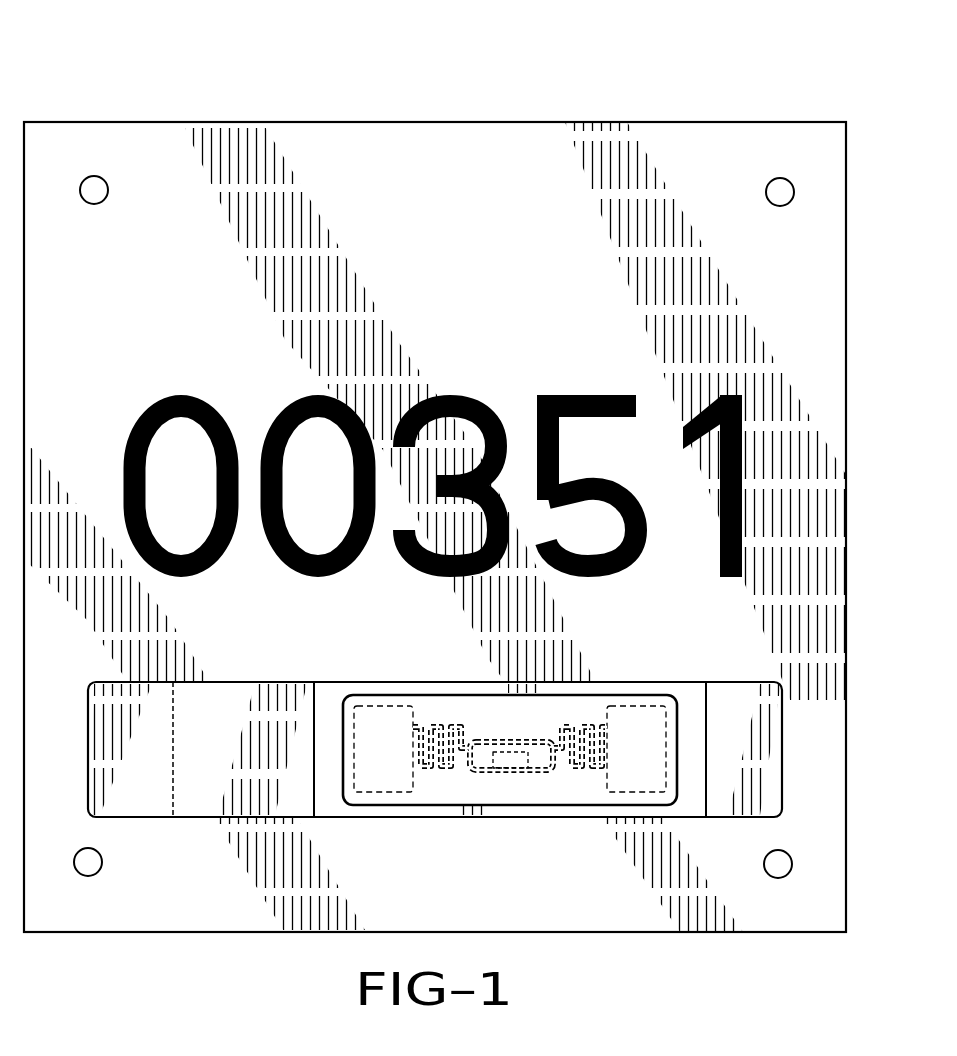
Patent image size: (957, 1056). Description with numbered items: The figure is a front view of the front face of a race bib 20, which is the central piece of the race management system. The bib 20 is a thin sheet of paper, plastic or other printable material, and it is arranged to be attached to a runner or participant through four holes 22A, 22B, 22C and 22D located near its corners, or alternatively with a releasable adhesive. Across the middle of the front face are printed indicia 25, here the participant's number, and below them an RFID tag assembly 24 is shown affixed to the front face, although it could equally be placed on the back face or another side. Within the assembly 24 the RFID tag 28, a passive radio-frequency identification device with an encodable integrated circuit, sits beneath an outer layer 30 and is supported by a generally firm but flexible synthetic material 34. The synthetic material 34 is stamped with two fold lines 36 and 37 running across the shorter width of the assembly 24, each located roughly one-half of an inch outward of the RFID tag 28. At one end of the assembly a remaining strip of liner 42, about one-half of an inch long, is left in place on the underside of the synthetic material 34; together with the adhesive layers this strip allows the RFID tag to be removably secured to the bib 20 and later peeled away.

The bib 20 is at (566, 106).
The hole 22A is at (92, 188).
The hole 22B is at (779, 190).
The hole 22C is at (88, 866).
The hole 22D is at (777, 866).
The RFID tag assembly 24 is at (435, 751).
The indicia 25 is at (474, 397).
The RFID tag 28 is at (391, 766).
The outer layer 30 is at (510, 786).
The synthetic material 34 is at (220, 702).
The fold line 36 is at (313, 708).
The fold line 37 is at (706, 793).
The liner 42 is at (147, 795).